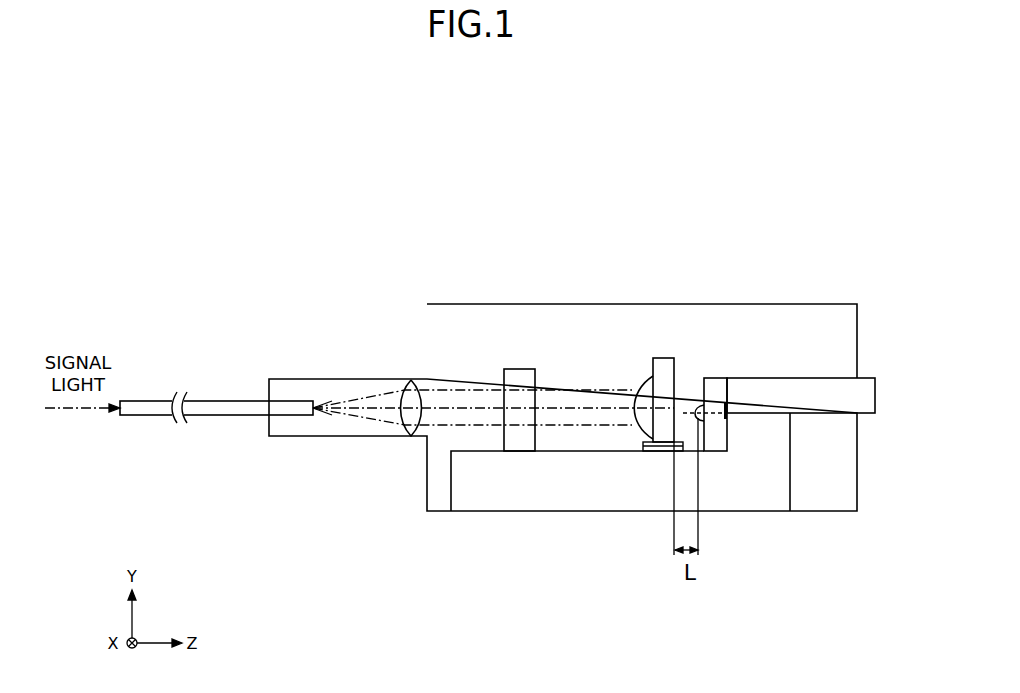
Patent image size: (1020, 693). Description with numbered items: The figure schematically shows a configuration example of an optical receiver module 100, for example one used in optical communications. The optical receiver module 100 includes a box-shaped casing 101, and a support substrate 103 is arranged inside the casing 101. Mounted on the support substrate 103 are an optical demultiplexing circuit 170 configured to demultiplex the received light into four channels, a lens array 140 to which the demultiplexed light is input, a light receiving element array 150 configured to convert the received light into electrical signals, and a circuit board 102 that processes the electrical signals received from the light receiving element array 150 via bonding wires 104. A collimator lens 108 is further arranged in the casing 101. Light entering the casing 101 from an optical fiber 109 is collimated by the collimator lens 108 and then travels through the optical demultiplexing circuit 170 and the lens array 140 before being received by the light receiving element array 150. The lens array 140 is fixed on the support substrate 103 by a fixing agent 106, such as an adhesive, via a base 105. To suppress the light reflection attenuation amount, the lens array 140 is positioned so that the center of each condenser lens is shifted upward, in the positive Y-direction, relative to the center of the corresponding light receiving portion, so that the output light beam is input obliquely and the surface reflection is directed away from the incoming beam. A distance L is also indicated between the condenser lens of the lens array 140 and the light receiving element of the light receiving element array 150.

The optical receiver module 100 is at (260, 284).
The casing 101 is at (797, 304).
The circuit board 102 is at (863, 378).
The support substrate 103 is at (572, 511).
The bonding wires 104 is at (721, 378).
The base 105 is at (657, 451).
The fixing agent 106 is at (643, 446).
The collimator lens 108 is at (407, 380).
The optical fiber 109 is at (207, 400).
The lens array 140 is at (663, 358).
The light receiving element array 150 is at (712, 378).
The optical demultiplexing circuit 170 is at (520, 369).